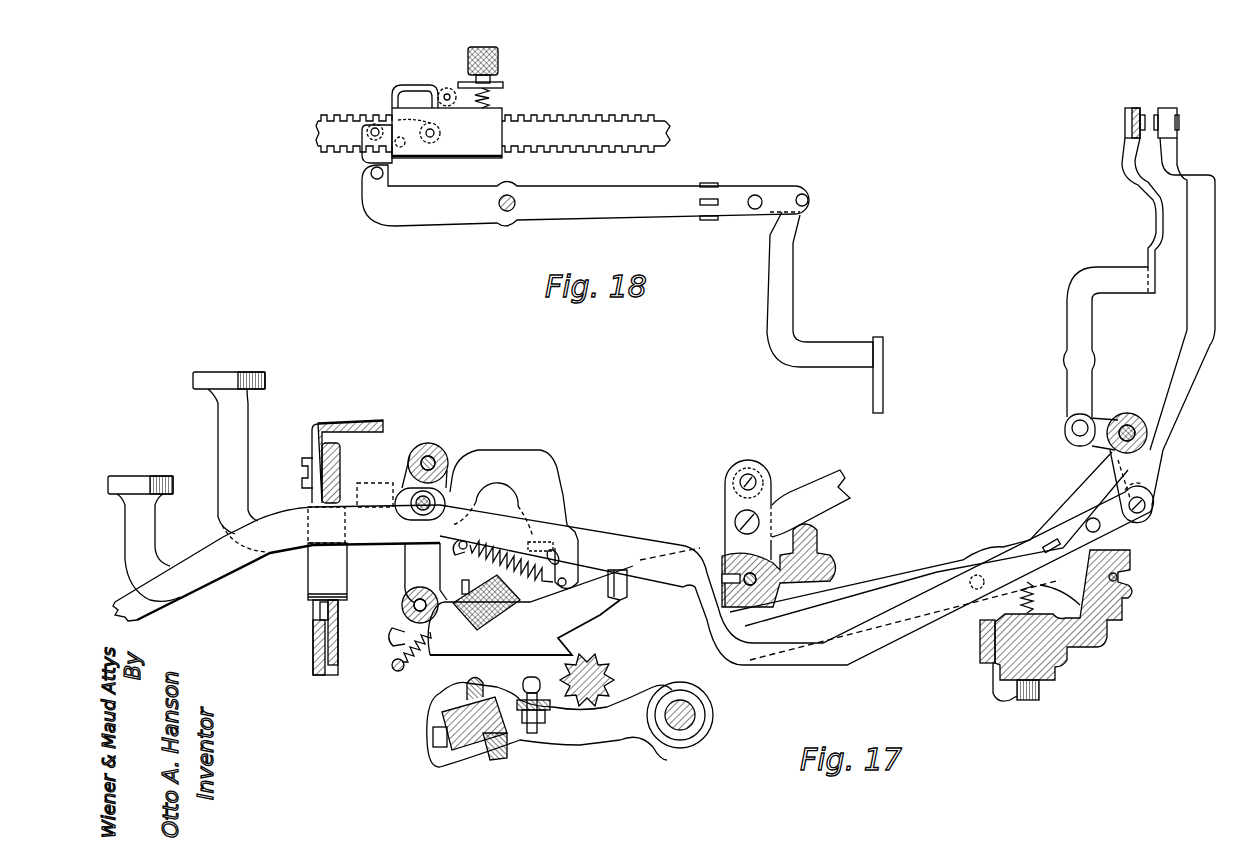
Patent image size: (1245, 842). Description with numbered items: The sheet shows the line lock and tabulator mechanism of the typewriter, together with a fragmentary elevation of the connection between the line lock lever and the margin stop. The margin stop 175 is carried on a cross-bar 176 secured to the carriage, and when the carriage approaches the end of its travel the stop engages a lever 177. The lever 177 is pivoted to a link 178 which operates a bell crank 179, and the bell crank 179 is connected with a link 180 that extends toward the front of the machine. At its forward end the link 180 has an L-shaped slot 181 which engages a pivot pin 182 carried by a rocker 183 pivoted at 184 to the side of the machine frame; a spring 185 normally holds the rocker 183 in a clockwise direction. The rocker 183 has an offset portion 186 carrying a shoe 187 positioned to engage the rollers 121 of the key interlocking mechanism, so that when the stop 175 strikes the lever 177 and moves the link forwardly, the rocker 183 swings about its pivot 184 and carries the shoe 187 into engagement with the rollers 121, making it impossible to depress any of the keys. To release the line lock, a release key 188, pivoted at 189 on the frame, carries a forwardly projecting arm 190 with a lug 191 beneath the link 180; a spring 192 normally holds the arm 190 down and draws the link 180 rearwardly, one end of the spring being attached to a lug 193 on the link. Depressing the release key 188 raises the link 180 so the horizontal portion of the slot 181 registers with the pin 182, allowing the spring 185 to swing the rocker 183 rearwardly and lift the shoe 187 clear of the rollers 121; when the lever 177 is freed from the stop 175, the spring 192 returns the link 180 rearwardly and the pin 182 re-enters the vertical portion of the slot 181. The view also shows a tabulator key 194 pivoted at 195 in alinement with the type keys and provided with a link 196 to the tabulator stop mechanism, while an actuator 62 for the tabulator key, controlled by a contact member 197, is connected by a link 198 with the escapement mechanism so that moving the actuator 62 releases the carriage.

In FIG. 17, the actuator 62 is at (683, 530).
In FIG. 17, the rollers 121 is at (317, 605).
In FIG. 18, the margin stop 175 is at (492, 152).
In FIG. 18, the cross-bar 176 is at (637, 120).
In FIG. 18, the lever 177 is at (628, 210).
In FIG. 18, the link 178 is at (785, 307).
In FIG. 17, the link 178 is at (1075, 328).
In FIG. 17, the bell crank 179 is at (1143, 475).
In FIG. 17, the link 180 is at (818, 657).
In FIG. 17, the L-shaped slot 181 is at (457, 498).
In FIG. 17, the pivot pin 182 is at (405, 453).
In FIG. 17, the rocker 183 is at (405, 568).
In FIG. 17, the pivot 184 is at (400, 612).
In FIG. 17, the spring 185 is at (410, 662).
In FIG. 17, the offset portion 186 is at (364, 488).
In FIG. 17, the shoe 187 is at (318, 578).
In FIG. 17, the release key 188 is at (150, 533).
In FIG. 17, the pivot 189 is at (443, 447).
In FIG. 17, the arm 190 is at (507, 520).
In FIG. 17, the lug 191 is at (555, 557).
In FIG. 17, the spring 192 is at (563, 603).
In FIG. 17, the lug 193 is at (462, 549).
In FIG. 17, the tabulator key 194 is at (235, 437).
In FIG. 17, the pivot 195 is at (1130, 570).
In FIG. 17, the link 196 is at (1170, 400).
In FIG. 17, the contact member 197 is at (622, 592).
In FIG. 17, the link 198 is at (830, 498).